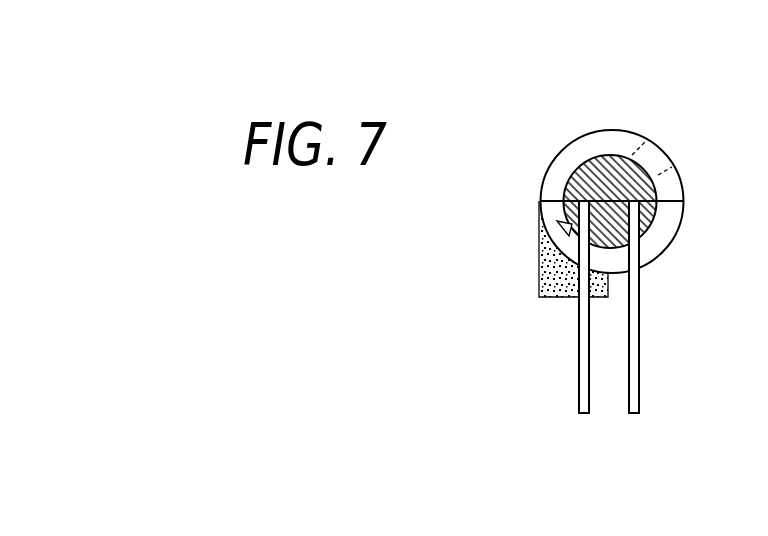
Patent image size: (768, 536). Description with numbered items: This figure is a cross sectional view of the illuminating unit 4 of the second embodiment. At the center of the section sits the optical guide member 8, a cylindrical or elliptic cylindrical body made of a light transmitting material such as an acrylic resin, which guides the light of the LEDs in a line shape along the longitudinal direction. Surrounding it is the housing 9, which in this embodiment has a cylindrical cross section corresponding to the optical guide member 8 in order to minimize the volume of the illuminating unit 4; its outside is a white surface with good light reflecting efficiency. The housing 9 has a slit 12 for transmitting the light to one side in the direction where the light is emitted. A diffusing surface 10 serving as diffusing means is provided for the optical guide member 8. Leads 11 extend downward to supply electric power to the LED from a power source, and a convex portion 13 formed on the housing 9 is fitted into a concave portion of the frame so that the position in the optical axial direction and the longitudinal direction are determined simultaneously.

The illuminating unit 4 is at (604, 269).
The optical guide member 8 is at (595, 156).
The housing 9 is at (564, 168).
The diffusing surface 10 is at (557, 222).
The lead 11 is at (583, 413).
The slit 12 is at (652, 161).
The convex portions 13 is at (539, 253).